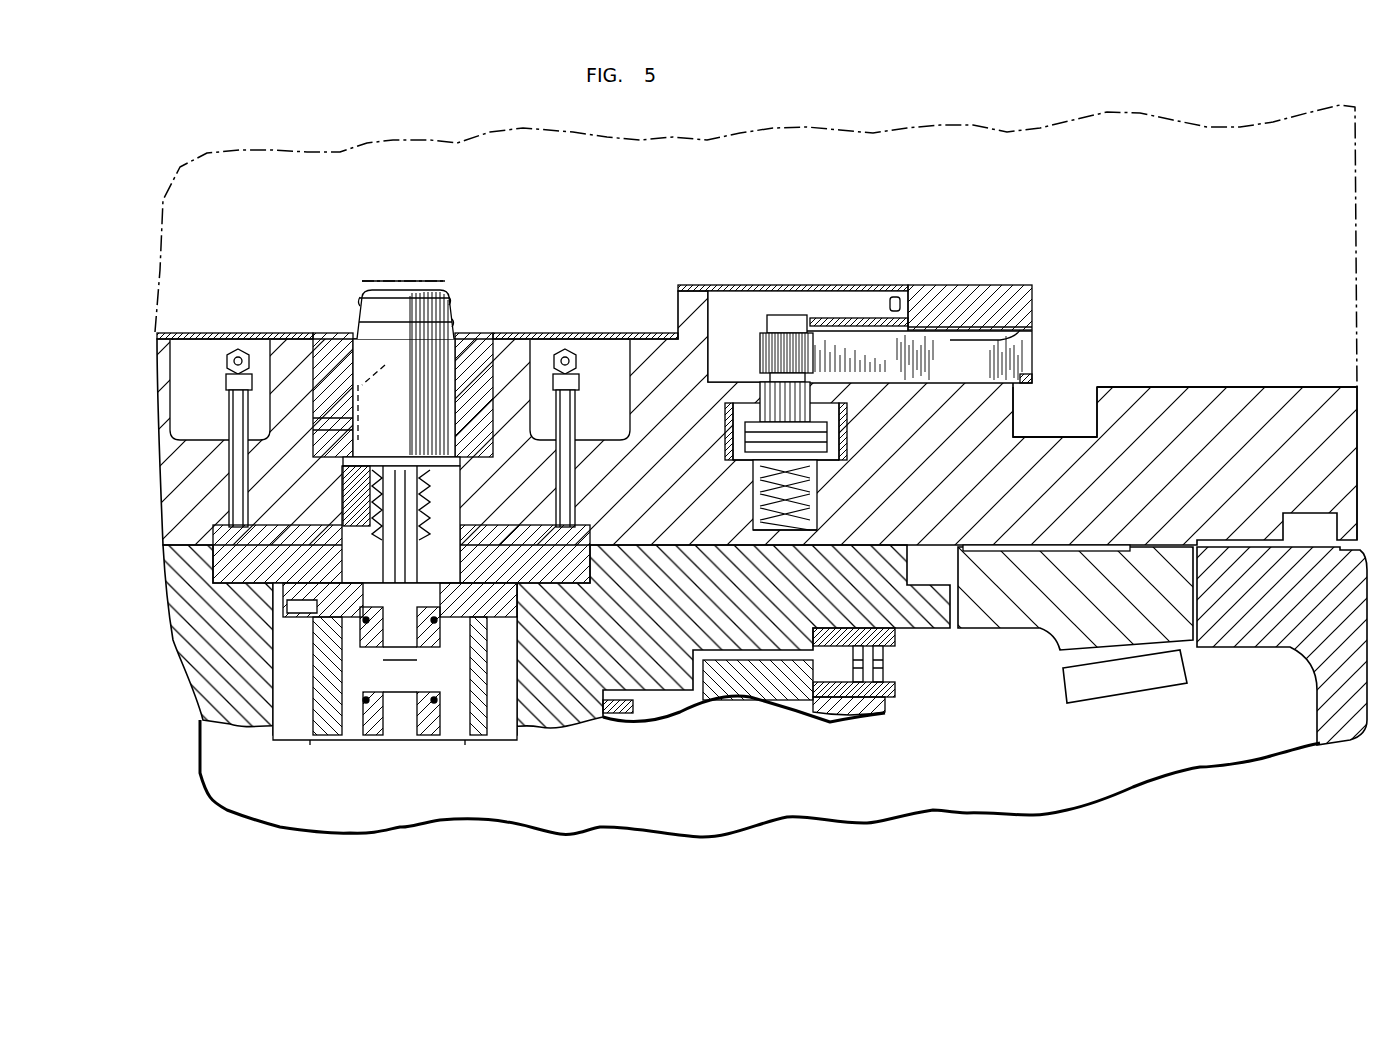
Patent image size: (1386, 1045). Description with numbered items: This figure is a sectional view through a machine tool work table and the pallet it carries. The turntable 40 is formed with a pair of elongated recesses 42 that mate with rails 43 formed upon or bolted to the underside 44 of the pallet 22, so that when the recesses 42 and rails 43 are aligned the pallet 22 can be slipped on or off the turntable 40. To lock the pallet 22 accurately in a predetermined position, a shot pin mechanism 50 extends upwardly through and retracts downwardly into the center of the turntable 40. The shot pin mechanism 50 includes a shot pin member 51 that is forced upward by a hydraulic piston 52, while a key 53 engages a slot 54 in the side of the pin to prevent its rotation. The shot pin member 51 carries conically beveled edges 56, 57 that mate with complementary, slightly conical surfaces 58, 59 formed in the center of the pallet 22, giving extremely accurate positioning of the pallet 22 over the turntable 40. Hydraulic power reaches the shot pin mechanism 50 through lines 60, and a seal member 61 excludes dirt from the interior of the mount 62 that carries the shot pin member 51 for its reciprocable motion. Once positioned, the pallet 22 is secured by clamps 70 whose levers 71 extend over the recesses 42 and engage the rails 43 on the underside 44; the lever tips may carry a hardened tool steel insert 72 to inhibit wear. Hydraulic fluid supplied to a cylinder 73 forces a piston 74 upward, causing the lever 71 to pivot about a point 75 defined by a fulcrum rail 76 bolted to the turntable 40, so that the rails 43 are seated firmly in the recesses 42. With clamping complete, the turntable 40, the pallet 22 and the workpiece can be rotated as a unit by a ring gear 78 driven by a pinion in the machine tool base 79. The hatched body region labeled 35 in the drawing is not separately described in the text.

The pallet 22 is at (1187, 269).
The base body 35 is at (462, 505).
The turntable 40 is at (1206, 478).
The recesses 42 is at (1053, 440).
The rails 43 is at (1062, 421).
The underside 44 is at (1230, 387).
The shot pin mechanism 50 is at (462, 275).
The shot pin member 51 is at (404, 408).
The hydraulic piston 52 is at (470, 653).
The key 53 is at (353, 430).
The slot 54 is at (377, 389).
The conically beveled edge 56 is at (443, 340).
The conically beveled edge 57 is at (440, 309).
The complementary surface 58 is at (360, 318).
The complementary surface 59 is at (363, 297).
The lines 60 is at (330, 745).
The seal member 61 is at (345, 335).
The mount 62 is at (493, 335).
The clamp 70 is at (912, 330).
The lever 71 is at (911, 357).
The hardened tool steel insert 72 is at (1032, 380).
The cylinder 73 is at (820, 470).
The piston 74 is at (840, 446).
The pivot point 75 is at (1000, 342).
The fulcrum rail 76 is at (968, 314).
The ring gear 78 is at (1108, 608).
The machine tool base 79 is at (1291, 608).